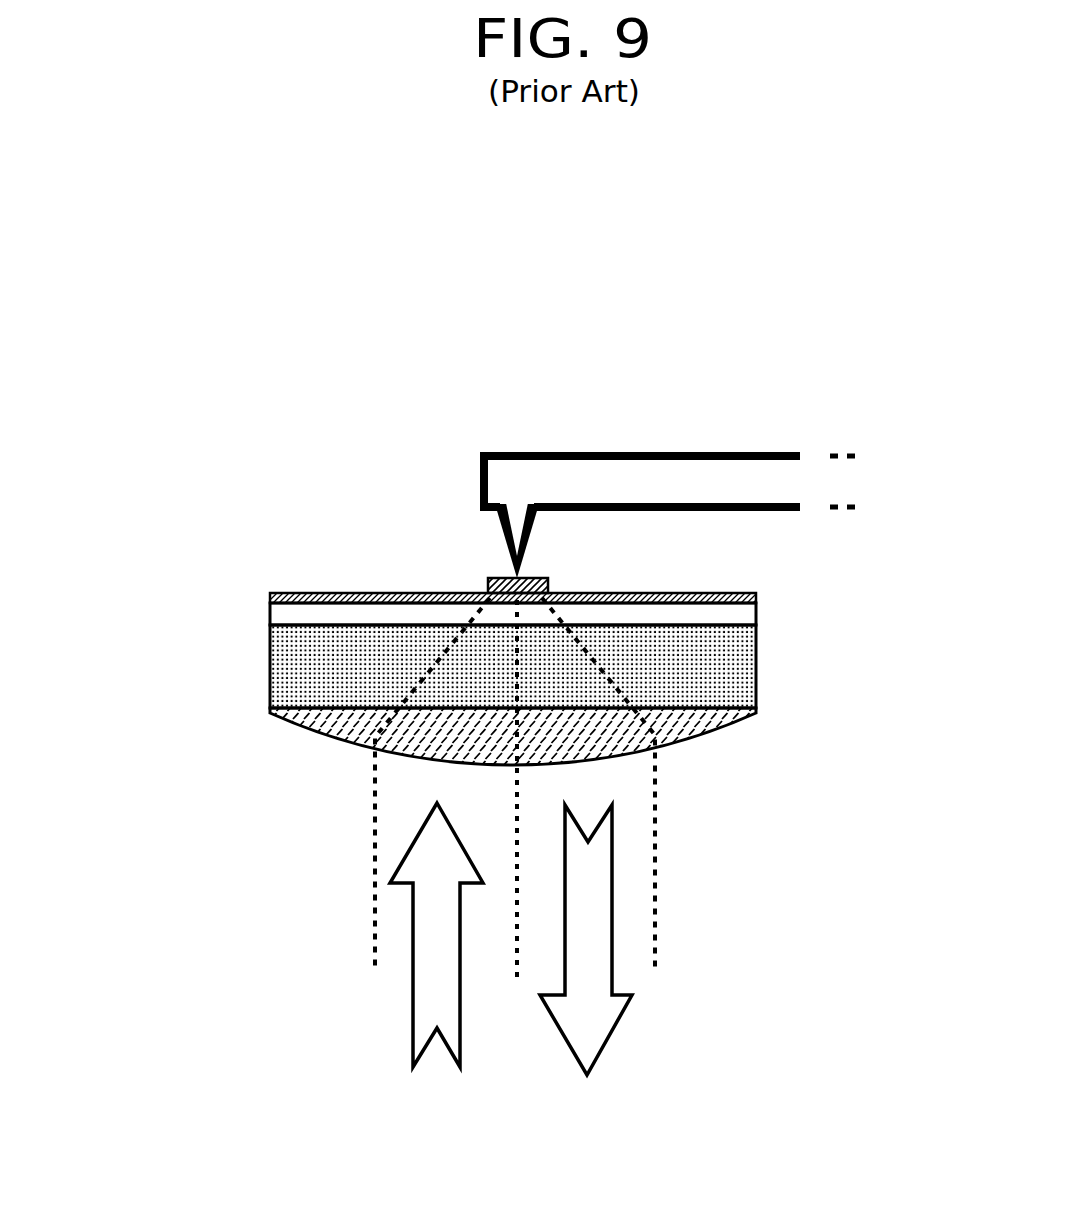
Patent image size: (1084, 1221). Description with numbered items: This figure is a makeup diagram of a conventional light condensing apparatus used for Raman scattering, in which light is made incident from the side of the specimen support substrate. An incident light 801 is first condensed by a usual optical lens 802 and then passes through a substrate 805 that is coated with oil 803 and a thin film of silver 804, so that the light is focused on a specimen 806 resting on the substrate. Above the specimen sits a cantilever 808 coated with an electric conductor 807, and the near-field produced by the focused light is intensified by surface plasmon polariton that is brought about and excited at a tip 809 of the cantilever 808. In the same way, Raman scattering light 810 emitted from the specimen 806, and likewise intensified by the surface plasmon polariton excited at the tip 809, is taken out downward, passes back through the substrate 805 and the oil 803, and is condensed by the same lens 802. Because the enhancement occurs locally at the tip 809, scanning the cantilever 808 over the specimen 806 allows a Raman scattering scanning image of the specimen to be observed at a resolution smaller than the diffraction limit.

The incident light 801 is at (427, 958).
The optical lens 802 is at (320, 723).
The oil 803 is at (290, 672).
The thin film of silver 804 is at (290, 593).
The substrate 805 is at (270, 617).
The specimen 806 is at (488, 583).
The electric conductor 807 is at (613, 510).
The cantilever 808 is at (803, 483).
The tip 809 is at (515, 570).
The Raman scattering light 810 is at (590, 948).